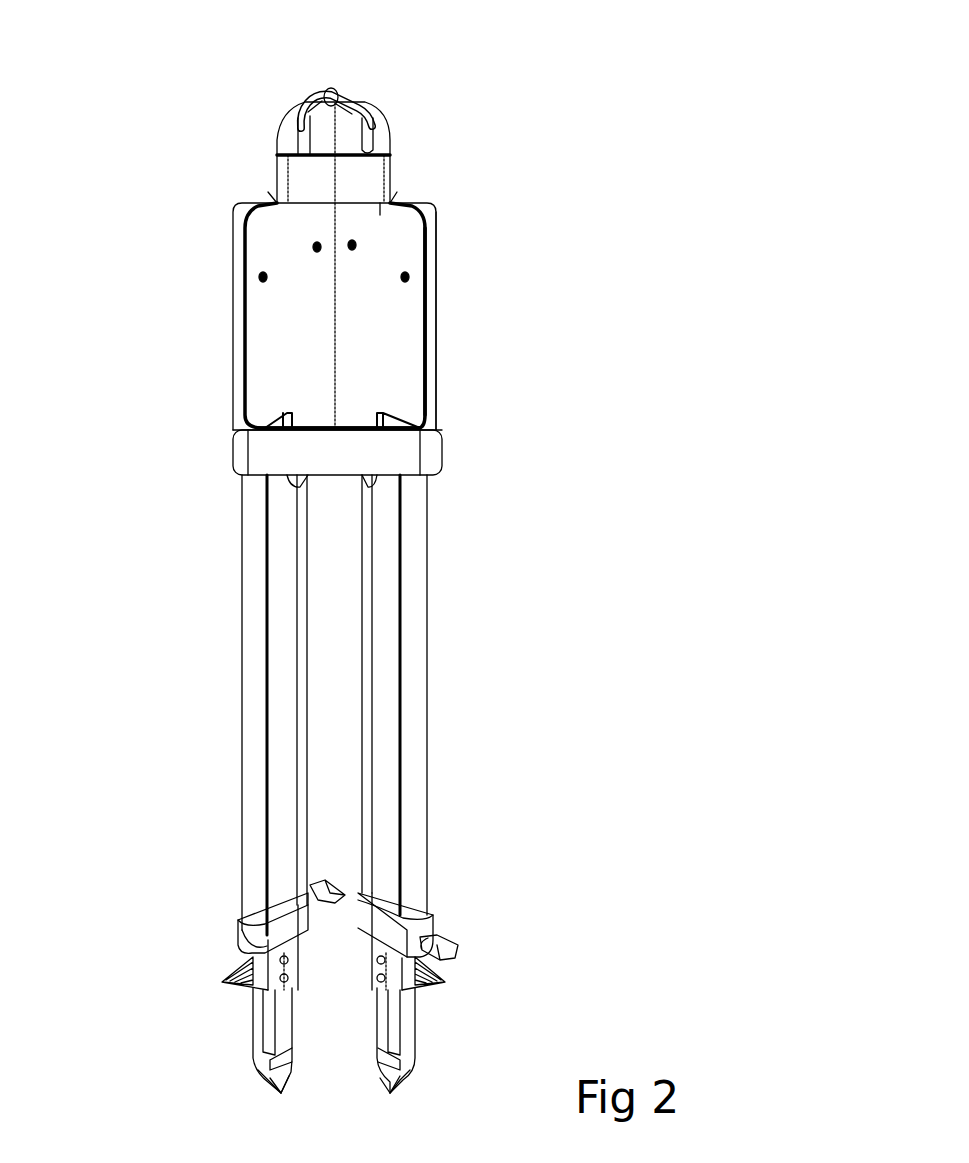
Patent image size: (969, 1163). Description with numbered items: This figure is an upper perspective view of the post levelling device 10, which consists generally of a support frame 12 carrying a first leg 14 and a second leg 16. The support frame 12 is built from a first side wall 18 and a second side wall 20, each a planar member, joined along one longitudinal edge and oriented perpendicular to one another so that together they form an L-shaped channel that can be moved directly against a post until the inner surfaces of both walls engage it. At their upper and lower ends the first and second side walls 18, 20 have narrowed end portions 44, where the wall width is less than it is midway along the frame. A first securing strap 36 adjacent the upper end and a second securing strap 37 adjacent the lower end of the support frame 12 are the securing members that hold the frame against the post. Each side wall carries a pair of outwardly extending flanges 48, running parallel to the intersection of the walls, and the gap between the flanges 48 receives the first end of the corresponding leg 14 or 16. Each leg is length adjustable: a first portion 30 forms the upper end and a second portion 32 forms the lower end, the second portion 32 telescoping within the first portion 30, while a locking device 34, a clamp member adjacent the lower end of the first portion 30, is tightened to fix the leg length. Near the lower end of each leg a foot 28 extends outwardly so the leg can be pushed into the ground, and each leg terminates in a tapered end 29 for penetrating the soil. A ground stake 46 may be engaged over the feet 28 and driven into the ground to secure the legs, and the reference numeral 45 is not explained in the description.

The post levelling device 10 is at (494, 190).
The support frame 12 is at (455, 322).
The first leg 14 is at (433, 635).
The second leg 16 is at (228, 663).
The first side wall 18 is at (410, 393).
The second side wall 20 is at (287, 368).
The foot 28 is at (247, 983).
The tapered end 29 is at (272, 1092).
The first portion 30 is at (258, 793).
The second portion 32 is at (253, 1030).
The locking device 34 is at (320, 880).
The first securing strap 36 is at (283, 185).
The second securing strap 37 is at (258, 445).
The narrowed end portion 44 is at (317, 98).
The lug 45 is at (390, 413).
The ground stake 46 is at (347, 92).
The flange 48 is at (436, 270).